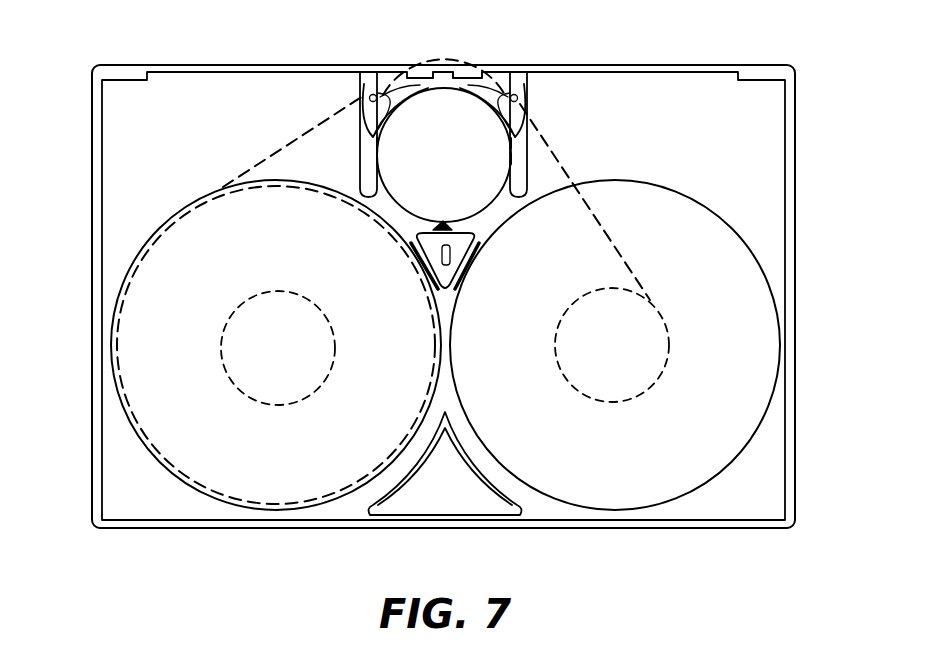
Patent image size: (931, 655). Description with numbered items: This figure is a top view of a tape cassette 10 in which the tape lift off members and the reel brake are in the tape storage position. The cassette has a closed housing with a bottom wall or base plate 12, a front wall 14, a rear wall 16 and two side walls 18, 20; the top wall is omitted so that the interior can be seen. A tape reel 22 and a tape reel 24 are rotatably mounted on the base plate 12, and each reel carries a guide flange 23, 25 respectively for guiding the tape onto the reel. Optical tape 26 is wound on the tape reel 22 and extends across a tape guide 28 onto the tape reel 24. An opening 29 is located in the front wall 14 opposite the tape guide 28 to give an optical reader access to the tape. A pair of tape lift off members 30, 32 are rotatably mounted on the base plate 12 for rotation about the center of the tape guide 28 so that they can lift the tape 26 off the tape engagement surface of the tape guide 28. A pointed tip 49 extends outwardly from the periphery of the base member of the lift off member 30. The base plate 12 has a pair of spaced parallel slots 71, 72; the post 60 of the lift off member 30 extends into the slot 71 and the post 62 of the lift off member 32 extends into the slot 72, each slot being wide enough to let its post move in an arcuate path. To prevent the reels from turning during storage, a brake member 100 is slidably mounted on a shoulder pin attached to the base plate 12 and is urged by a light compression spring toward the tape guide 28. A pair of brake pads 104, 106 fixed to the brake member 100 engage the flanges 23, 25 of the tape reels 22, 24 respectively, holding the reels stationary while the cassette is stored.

The tape cassette 10 is at (695, 58).
The bottom wall or base plate 12 is at (767, 155).
The front wall 14 is at (578, 63).
The rear wall 16 is at (585, 528).
The side wall 18 is at (92, 233).
The side wall 20 is at (795, 238).
The tape reel 22 is at (268, 481).
The guide flange 23 is at (192, 210).
The tape reel 24 is at (601, 481).
The guide flange 25 is at (683, 193).
The optical tape 26 is at (297, 140).
The tape guide 28 is at (486, 193).
The opening 29 is at (443, 72).
The tape lift off member 30 is at (370, 88).
The tape lift off member 32 is at (529, 88).
The pointed tip 49 is at (418, 243).
The post 60 is at (364, 96).
The post 62 is at (522, 97).
The slot 71 is at (366, 162).
The slot 72 is at (497, 77).
The brake member 100 is at (415, 250).
The brake pad 104 is at (425, 285).
The brake pad 106 is at (462, 285).